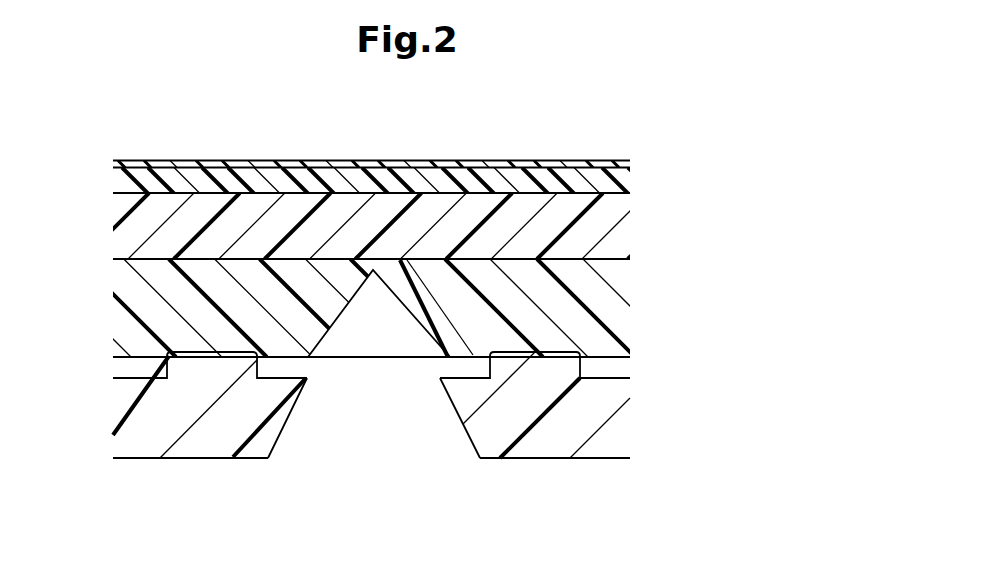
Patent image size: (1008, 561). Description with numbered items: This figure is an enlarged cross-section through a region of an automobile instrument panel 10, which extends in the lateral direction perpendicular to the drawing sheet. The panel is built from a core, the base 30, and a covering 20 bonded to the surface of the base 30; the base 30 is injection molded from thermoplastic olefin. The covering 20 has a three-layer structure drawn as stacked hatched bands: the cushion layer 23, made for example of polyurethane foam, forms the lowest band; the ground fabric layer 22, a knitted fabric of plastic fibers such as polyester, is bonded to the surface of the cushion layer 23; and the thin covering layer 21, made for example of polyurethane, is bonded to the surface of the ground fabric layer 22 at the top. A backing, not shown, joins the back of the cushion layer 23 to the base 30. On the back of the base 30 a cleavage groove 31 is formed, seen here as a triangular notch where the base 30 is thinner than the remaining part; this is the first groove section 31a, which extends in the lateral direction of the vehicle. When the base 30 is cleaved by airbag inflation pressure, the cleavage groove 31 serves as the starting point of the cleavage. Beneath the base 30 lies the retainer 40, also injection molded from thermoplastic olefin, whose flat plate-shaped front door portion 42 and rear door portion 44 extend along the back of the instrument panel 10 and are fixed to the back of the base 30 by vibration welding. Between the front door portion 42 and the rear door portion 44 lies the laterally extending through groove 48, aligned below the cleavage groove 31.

The instrument panel 10 is at (570, 151).
The covering 20 is at (103, 161).
The covering layer 21 is at (627, 164).
The ground fabric layer 22 is at (627, 184).
The cushion layer 23 is at (627, 234).
The base 30 is at (103, 262).
The cleavage groove 31 is at (379, 339).
The first groove section 31a is at (321, 339).
The retainer 40 is at (128, 470).
The front door portion 42 is at (196, 460).
The rear door portion 44 is at (549, 459).
The through groove 48 is at (470, 436).